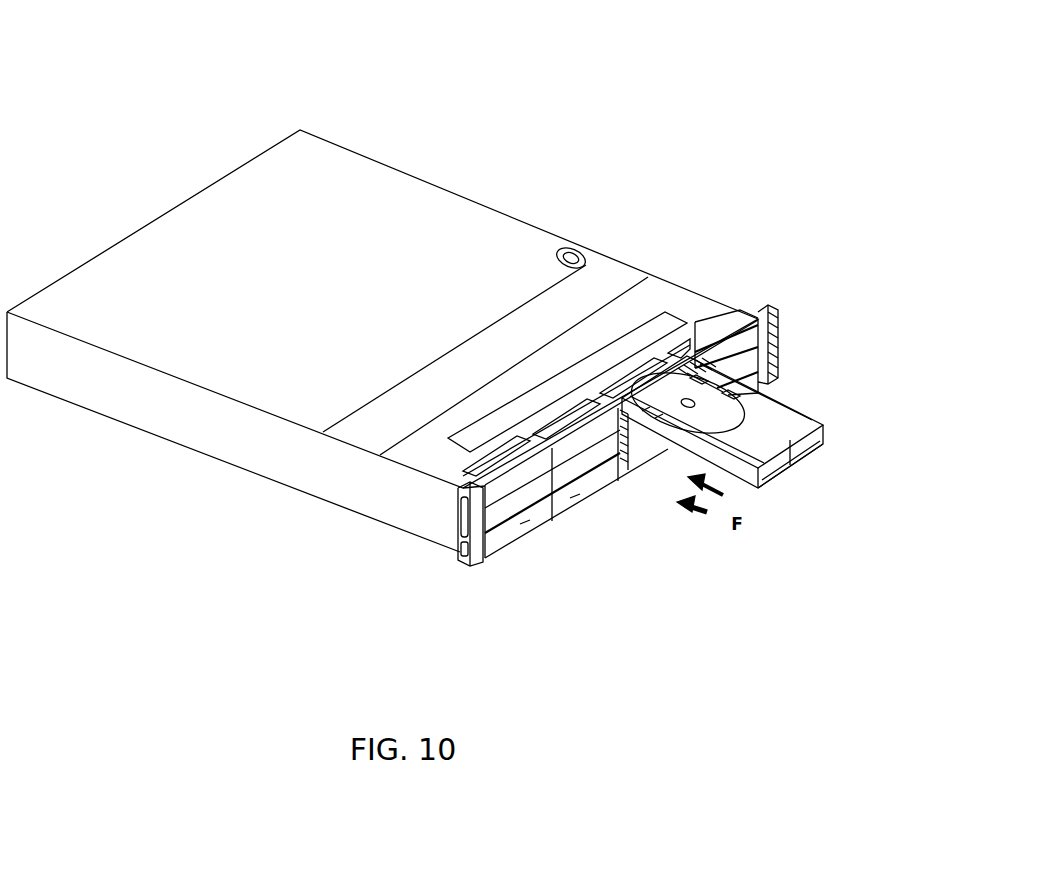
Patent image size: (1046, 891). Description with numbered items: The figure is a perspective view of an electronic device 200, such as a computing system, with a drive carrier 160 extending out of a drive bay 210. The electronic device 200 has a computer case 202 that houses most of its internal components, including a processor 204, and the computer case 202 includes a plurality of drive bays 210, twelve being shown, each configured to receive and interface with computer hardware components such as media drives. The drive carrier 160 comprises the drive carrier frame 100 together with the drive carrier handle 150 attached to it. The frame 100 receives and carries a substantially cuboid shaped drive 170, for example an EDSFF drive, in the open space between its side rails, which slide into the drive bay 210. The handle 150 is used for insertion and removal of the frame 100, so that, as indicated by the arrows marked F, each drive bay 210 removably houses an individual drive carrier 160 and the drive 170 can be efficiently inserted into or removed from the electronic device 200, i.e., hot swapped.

The electronic device 200 is at (172, 136).
The computer case 202 is at (325, 188).
The processor 204 is at (348, 285).
The drive bay 210 is at (690, 380).
The frame 100 is at (773, 422).
The drive 170 is at (733, 410).
The handle 150 is at (798, 450).
The drive carrier 160 is at (574, 498).